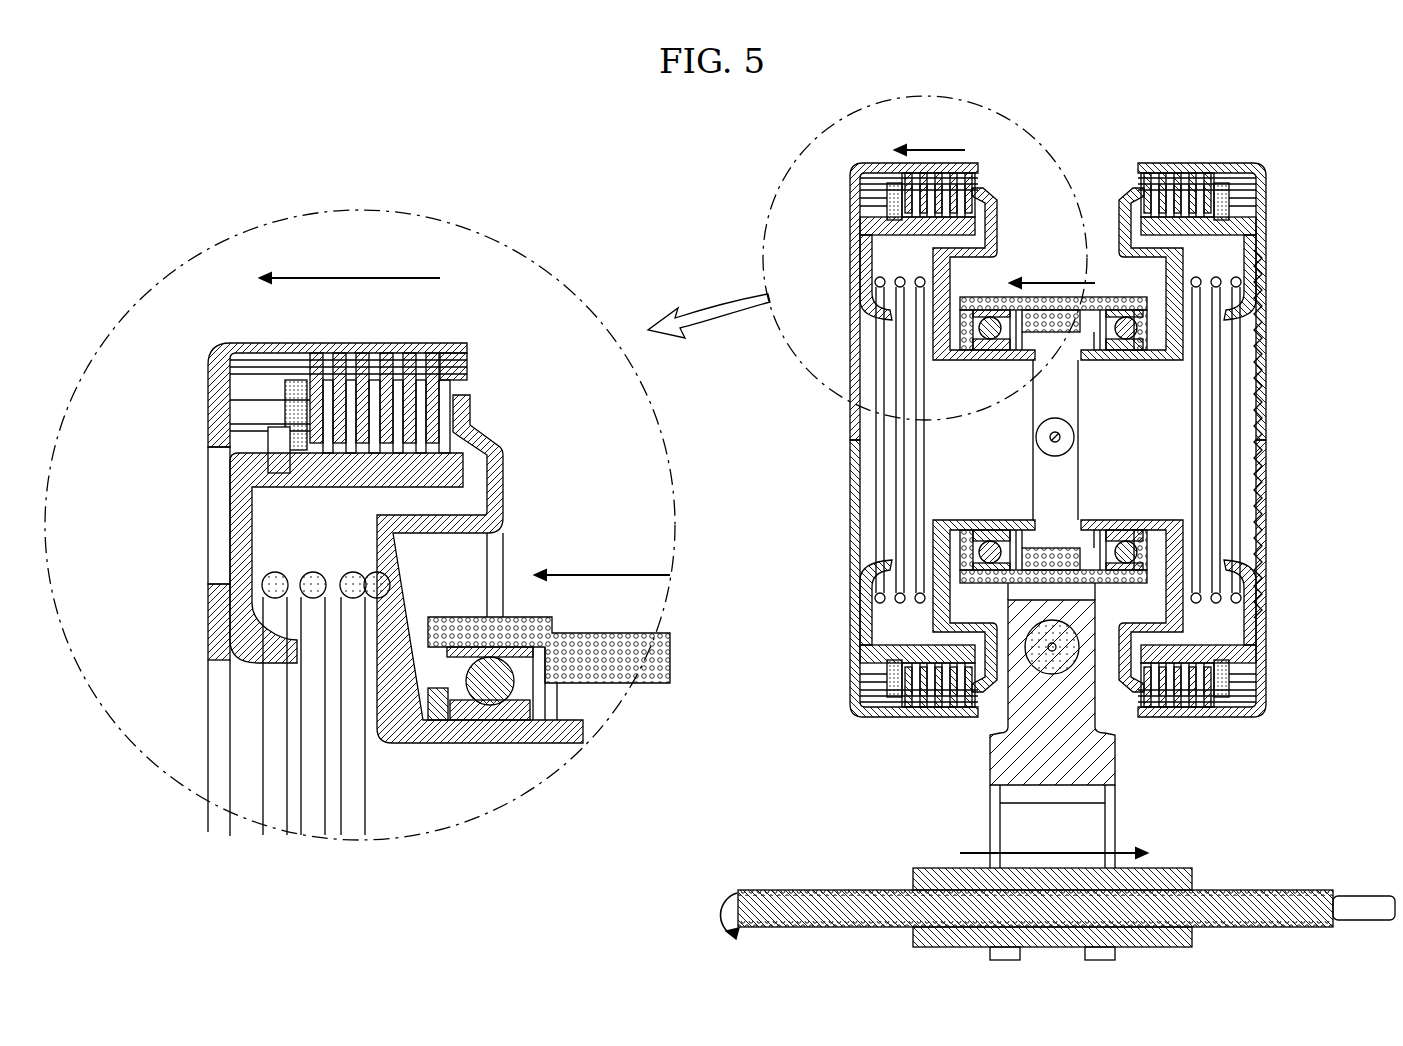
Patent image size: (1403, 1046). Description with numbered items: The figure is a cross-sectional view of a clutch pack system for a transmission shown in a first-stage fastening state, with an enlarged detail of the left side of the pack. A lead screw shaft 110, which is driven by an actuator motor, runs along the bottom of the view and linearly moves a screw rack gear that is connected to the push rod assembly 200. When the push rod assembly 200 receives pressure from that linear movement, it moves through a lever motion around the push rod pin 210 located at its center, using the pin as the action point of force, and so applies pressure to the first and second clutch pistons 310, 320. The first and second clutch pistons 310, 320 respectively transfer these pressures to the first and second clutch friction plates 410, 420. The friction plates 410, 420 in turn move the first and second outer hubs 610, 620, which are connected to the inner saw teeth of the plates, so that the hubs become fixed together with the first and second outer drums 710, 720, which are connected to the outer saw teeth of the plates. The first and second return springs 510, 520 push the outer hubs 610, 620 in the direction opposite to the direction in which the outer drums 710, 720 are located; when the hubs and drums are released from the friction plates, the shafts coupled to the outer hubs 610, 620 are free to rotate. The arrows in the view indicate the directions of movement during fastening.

The lead screw shaft 110 is at (848, 900).
The push rod assembly 200 is at (1140, 775).
The push rod pin 210 is at (1068, 655).
The first clutch piston 310 is at (985, 208).
The second clutch piston 320 is at (1125, 208).
The first clutch friction plates 410 is at (935, 712).
The second clutch friction plates 420 is at (1200, 700).
The first return spring 510 is at (880, 593).
The second return spring 520 is at (1234, 593).
The first outer hub 610 is at (860, 245).
The second outer hub 620 is at (1256, 247).
The first outer drum 710 is at (874, 163).
The second outer drum 720 is at (1222, 160).